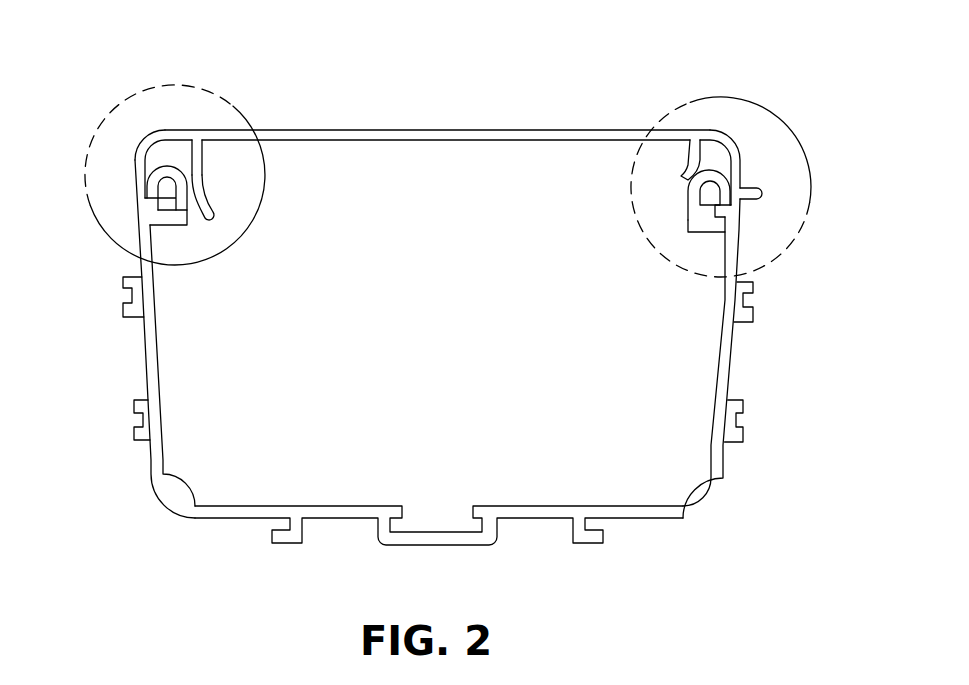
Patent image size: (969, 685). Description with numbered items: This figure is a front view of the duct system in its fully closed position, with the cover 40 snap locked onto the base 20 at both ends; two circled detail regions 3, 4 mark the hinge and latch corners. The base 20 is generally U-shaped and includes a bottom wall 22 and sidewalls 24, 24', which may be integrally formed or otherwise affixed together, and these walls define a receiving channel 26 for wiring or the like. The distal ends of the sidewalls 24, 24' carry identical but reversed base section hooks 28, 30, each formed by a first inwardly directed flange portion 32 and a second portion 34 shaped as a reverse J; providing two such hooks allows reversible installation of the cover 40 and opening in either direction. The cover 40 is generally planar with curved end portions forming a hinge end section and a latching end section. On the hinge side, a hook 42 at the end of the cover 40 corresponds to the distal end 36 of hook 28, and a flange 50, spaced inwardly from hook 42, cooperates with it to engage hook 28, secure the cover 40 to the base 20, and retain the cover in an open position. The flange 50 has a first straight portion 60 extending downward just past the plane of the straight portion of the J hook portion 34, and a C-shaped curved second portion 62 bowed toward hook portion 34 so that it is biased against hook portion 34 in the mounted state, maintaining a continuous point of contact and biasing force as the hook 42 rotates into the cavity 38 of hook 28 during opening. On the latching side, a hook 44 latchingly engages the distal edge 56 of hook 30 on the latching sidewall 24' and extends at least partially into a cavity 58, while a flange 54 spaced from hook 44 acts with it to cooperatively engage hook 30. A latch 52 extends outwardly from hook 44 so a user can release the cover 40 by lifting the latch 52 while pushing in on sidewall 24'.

The detail circle FIG. 3 is at (120, 106).
The detail circle FIG. 4 is at (799, 140).
The base 20 is at (451, 308).
The bottom wall 22 is at (252, 512).
The sidewall 24 is at (130, 339).
The latching sidewall 24' is at (762, 358).
The receiving channel 26 is at (602, 465).
The base section hook 28 is at (155, 218).
The base section hook 30 is at (719, 214).
The first inwardly directed flange portion 32 is at (176, 226).
The second portion 34 is at (166, 192).
The distal end 36 is at (150, 195).
The cavity 38 is at (186, 233).
The cover 40 is at (475, 131).
The hook 42 is at (138, 160).
The hook 44 is at (731, 151).
The flange 50 is at (226, 181).
The latch 52 is at (761, 192).
The flange 54 is at (682, 160).
The distal edge 56 is at (731, 207).
The cavity 58 is at (704, 193).
The first straight portion 60 is at (203, 152).
The curved second portion 62 is at (212, 210).